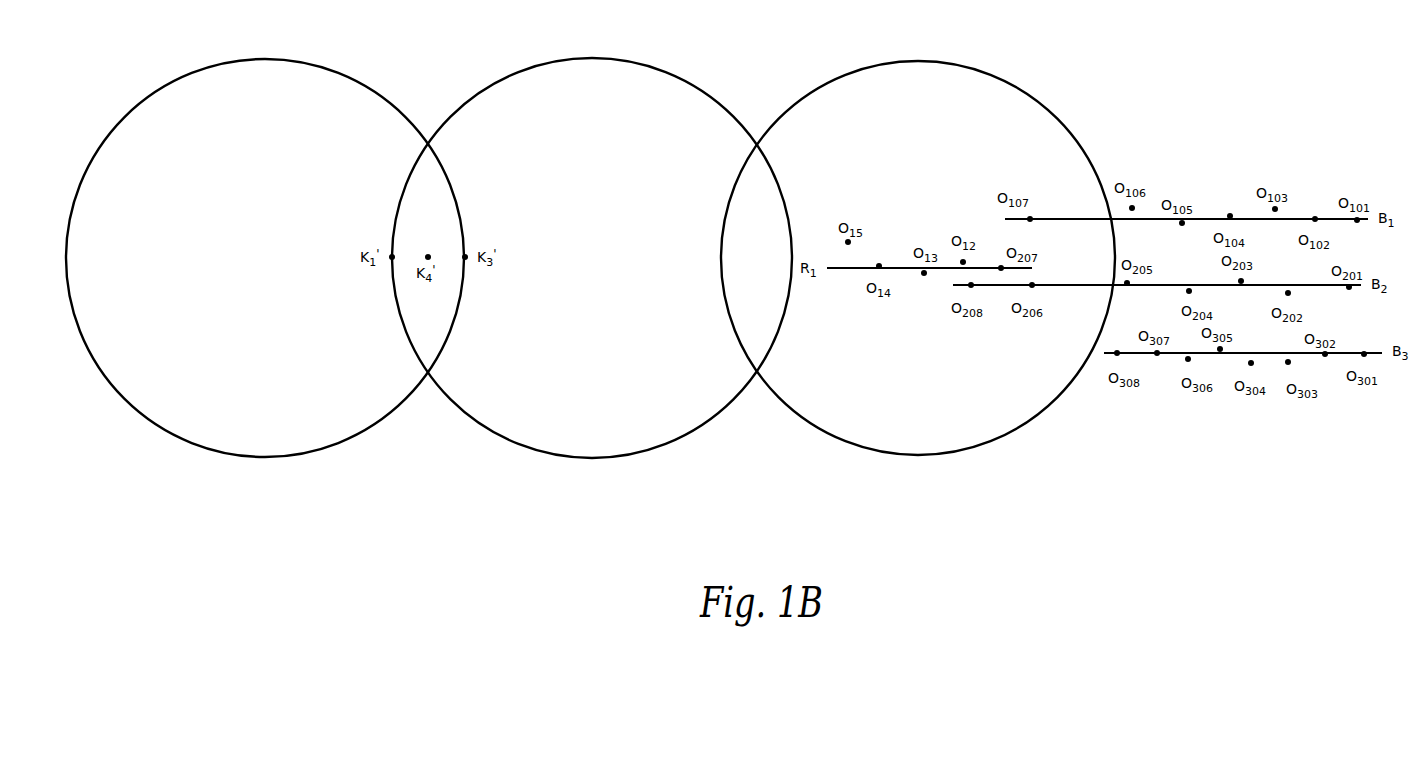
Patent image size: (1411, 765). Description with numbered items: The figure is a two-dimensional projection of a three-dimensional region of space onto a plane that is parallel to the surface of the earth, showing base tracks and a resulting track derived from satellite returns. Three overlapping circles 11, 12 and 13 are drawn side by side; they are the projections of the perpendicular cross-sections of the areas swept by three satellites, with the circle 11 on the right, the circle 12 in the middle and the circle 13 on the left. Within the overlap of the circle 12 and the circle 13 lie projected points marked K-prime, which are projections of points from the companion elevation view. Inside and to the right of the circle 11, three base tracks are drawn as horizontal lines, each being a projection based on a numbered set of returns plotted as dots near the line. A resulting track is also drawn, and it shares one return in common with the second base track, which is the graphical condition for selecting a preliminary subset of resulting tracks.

The circle 11 is at (1017, 85).
The circle 12 is at (702, 87).
The circle 13 is at (372, 90).